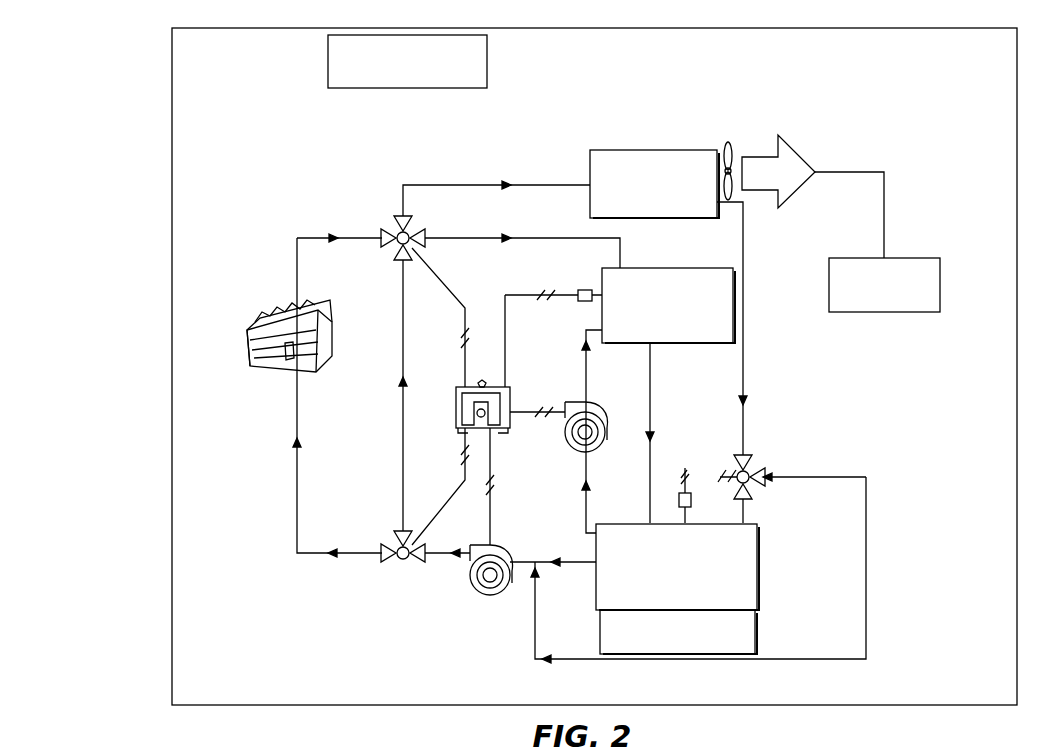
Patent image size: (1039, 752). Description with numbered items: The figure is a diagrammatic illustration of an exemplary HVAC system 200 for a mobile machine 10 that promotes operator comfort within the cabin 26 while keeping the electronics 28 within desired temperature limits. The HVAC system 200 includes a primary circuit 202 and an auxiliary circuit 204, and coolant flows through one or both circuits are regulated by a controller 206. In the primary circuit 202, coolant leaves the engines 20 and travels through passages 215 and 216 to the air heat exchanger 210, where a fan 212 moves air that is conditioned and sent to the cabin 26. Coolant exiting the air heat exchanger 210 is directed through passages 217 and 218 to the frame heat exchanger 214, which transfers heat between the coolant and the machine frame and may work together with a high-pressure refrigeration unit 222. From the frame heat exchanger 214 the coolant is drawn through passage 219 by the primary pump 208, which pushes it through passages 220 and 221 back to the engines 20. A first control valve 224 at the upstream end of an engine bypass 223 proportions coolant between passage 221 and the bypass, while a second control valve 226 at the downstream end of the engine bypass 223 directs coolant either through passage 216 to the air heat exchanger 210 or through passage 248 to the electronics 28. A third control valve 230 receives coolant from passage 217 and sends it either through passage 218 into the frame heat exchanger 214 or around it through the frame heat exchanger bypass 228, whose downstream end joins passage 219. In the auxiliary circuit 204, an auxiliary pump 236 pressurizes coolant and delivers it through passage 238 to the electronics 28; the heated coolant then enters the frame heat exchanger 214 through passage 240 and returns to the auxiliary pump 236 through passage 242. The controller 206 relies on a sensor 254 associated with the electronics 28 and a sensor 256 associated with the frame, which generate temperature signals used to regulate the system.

The vehicle 10 is at (953, 705).
The engine 20 is at (250, 322).
The cabin 26 is at (884, 285).
The electronics 28 is at (680, 343).
The HVAC system 200 is at (278, 78).
The primary circuit 202 is at (244, 246).
The auxiliary circuit 204 is at (627, 472).
The controller 206 is at (461, 390).
The primary pump 208 is at (498, 590).
The air heat exchanger 210 is at (620, 150).
The fan 212 is at (728, 141).
The frame heat exchanger 214 is at (760, 602).
The passage 215 is at (305, 218).
The passage 216 is at (468, 184).
The passage 217 is at (748, 410).
The passage 218 is at (750, 500).
The passage 219 is at (596, 566).
The passage 220 is at (440, 562).
The passage 221 is at (297, 525).
The high-pressure refrigeration unit 222 is at (757, 620).
The engine bypass 223 is at (402, 432).
The first control valve 224 is at (394, 546).
The second control valve 226 is at (397, 231).
The frame heat exchanger bypass 228 is at (866, 540).
The third control valve 230 is at (749, 467).
The auxiliary pump 236 is at (566, 403).
The passage 238 is at (582, 360).
The passage 240 is at (648, 392).
The passage 242 is at (582, 500).
The passage 248 is at (565, 238).
The sensor 254 is at (582, 290).
The sensor 256 is at (692, 500).